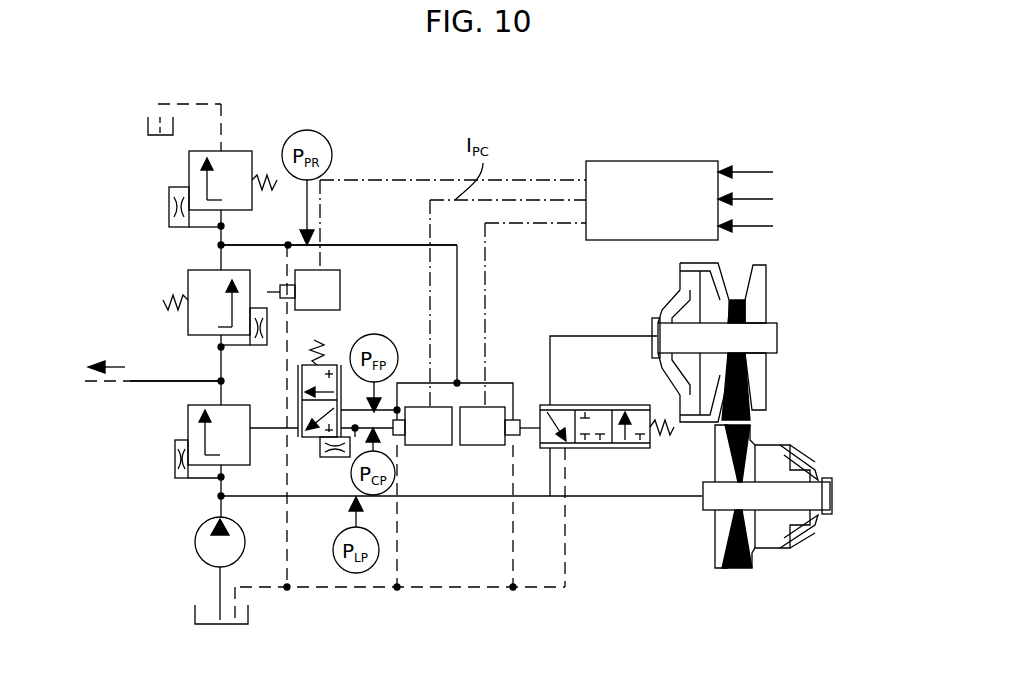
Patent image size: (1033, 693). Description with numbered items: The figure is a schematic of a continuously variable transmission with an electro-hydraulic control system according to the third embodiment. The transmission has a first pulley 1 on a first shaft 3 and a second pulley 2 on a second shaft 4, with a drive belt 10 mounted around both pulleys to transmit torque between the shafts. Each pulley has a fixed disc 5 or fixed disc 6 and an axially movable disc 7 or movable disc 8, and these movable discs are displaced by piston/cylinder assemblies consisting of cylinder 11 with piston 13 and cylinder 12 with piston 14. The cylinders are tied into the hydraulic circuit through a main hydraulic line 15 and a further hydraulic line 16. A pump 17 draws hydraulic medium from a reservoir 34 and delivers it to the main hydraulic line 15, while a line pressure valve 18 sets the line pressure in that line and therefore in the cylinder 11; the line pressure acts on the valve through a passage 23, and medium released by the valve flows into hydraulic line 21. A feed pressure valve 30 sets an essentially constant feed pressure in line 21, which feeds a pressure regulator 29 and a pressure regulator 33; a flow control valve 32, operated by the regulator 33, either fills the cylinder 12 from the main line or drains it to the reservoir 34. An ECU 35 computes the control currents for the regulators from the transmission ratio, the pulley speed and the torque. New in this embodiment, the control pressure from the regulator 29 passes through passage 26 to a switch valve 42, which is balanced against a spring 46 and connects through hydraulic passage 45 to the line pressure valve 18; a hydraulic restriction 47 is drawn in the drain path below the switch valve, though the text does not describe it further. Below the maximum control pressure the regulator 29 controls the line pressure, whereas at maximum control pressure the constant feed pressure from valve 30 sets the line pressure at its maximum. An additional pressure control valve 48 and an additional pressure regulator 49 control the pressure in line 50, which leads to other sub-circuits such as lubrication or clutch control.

The first pulley 1 is at (655, 558).
The second pulley 2 is at (723, 343).
The first shaft 3 is at (832, 497).
The second shaft 4 is at (780, 338).
The fixed disc 5 is at (718, 548).
The fixed disc 6 is at (755, 372).
The axially moveable disc 7 is at (755, 560).
The axially moveable disc 8 is at (718, 288).
The drive belt 10 is at (722, 420).
The cylinder 11 is at (785, 540).
The cylinder 12 is at (672, 310).
The piston 13 is at (815, 472).
The piston 14 is at (662, 318).
The main hydraulic line 15 is at (480, 498).
The further hydraulic line 16 is at (585, 336).
The pump 17 is at (195, 542).
The line pressure valve 18 is at (158, 426).
The hydraulic line 21 is at (330, 245).
The passage 23 is at (178, 478).
The passage 26 is at (397, 436).
The pressure regulator 29 is at (435, 445).
The feed pressure valve 30 is at (258, 134).
The flow control valve 32 is at (550, 405).
The pressure regulator 33 is at (468, 445).
The reservoir 34 is at (148, 122).
The ECU 35 is at (595, 161).
The switch valve 42 is at (298, 392).
The hydraulic passage 45 is at (298, 426).
The spring 46 is at (318, 345).
The orifice 47 is at (320, 452).
The pressure control valve 48 is at (188, 288).
The pressure regulator 49 is at (340, 292).
The line 50 is at (178, 380).